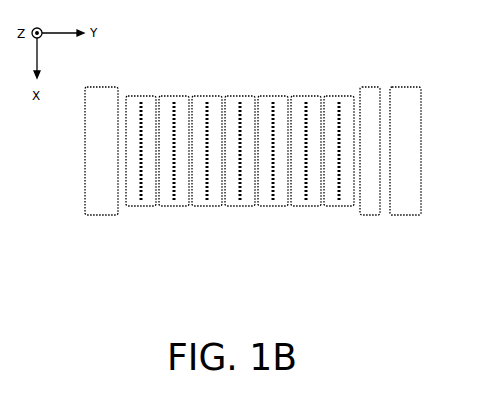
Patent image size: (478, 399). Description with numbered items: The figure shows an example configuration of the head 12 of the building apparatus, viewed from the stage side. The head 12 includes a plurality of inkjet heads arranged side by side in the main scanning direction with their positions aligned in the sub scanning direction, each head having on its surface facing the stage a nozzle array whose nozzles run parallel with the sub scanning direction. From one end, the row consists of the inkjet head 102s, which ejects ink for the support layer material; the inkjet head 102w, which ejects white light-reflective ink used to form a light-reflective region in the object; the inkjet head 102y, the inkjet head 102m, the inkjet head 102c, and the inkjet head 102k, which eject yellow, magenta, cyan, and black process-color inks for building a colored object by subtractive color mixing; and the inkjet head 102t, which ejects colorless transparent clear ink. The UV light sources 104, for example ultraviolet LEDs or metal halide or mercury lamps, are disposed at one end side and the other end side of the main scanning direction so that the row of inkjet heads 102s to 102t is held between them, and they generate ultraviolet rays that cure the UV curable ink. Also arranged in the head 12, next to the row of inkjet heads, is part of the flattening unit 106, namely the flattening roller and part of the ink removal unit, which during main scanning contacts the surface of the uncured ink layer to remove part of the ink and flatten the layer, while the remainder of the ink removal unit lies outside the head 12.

The head 12 is at (452, 38).
The UV light source 104 is at (100, 205).
The flattening unit 106 is at (372, 87).
The inkjet head 102s is at (145, 206).
The inkjet head 102w is at (172, 206).
The inkjet head 102y is at (210, 206).
The inkjet head 102m is at (240, 206).
The inkjet head 102c is at (276, 206).
The inkjet head 102k is at (305, 206).
The inkjet head 102t is at (343, 206).